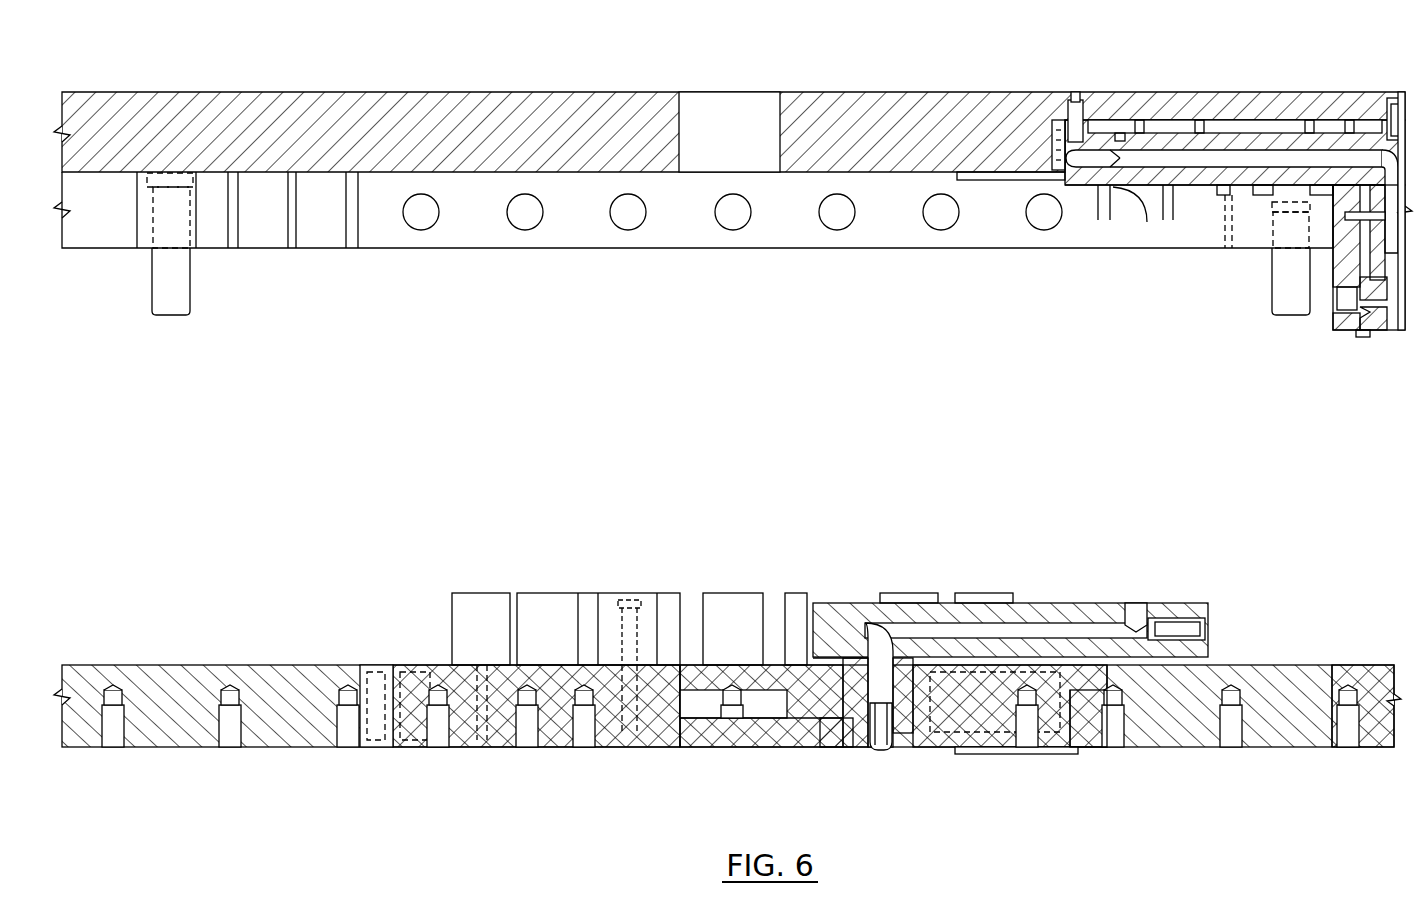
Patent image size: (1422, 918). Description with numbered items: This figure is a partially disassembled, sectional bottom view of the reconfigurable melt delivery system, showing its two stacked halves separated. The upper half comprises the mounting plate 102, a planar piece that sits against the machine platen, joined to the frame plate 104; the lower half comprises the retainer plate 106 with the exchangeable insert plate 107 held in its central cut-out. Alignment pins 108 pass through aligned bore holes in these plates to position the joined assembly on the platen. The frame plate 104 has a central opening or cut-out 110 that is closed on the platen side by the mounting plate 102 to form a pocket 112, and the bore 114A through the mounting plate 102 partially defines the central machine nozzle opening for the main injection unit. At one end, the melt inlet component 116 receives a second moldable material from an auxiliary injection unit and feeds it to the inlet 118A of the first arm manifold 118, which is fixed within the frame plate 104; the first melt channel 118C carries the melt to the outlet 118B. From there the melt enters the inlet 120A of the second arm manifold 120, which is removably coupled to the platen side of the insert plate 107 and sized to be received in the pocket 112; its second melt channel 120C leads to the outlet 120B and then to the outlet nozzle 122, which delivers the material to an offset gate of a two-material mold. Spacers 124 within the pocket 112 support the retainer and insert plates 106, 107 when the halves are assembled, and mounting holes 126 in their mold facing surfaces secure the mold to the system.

The mounting plate 102 is at (597, 115).
The frame plate 104 is at (485, 232).
The retainer plate 106 is at (288, 690).
The insert plate 107 is at (481, 746).
The alignment pins 108 is at (197, 282).
The central opening or cut-out 110 is at (360, 213).
The pocket 112 is at (574, 224).
The bore 114A is at (727, 118).
The melt inlet component 116 is at (1352, 343).
The first arm manifold 118 is at (1212, 126).
The inlet of the first arm manifold 118A is at (1396, 150).
The outlet of the first arm manifold 118B is at (1132, 192).
The first melt channel 118C is at (1207, 165).
The second arm manifold 120 is at (1081, 586).
The inlet of the second arm manifold 120A is at (1140, 605).
The outlet of the second arm manifold 120B is at (868, 625).
The second melt channel 120C is at (1035, 630).
The outlet nozzle 122 is at (851, 756).
The spacers 124 is at (483, 620).
The mounting holes 126 is at (1117, 730).